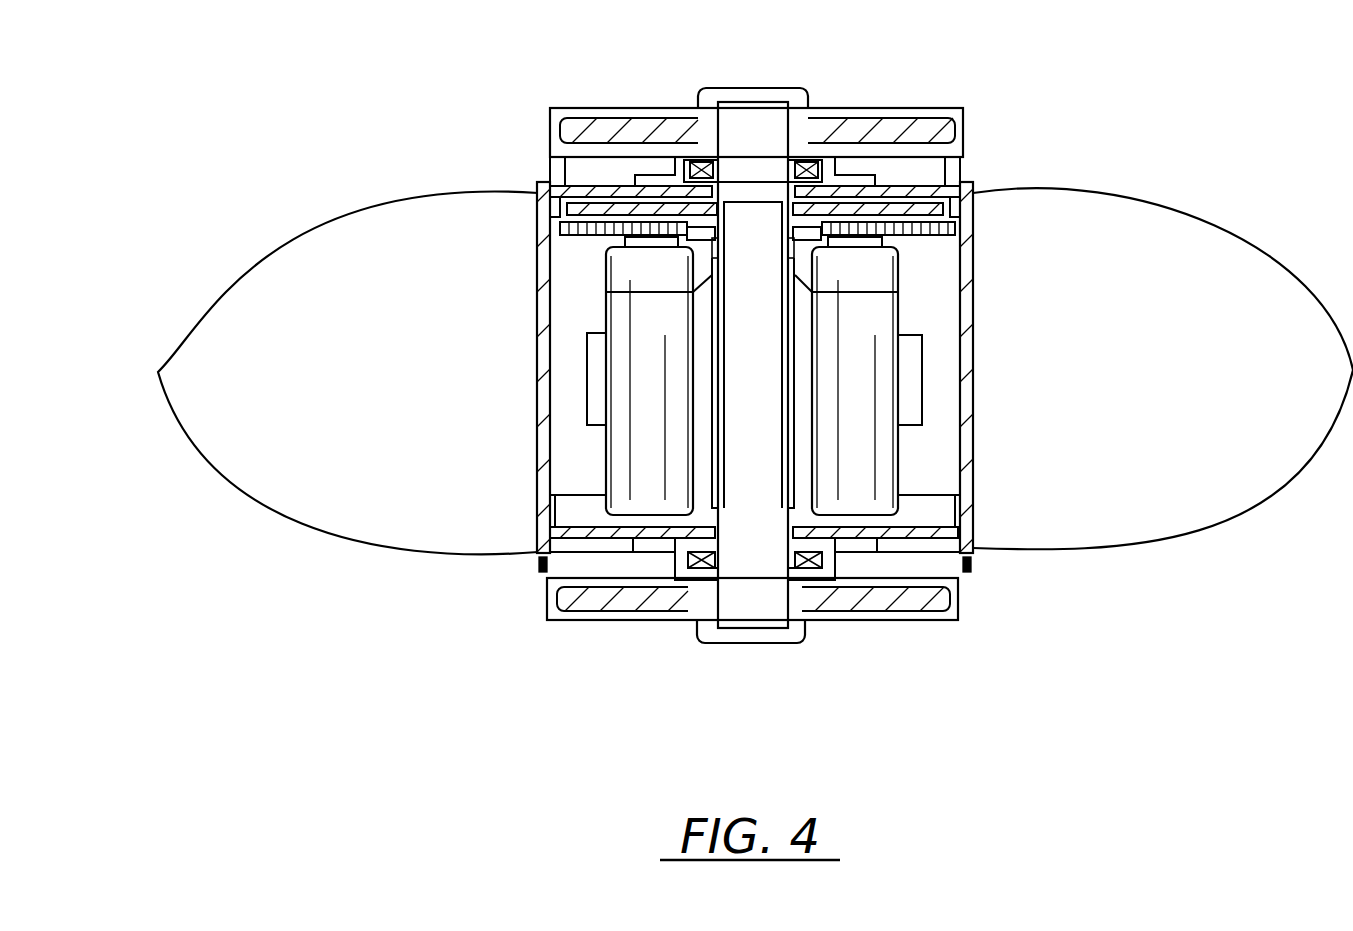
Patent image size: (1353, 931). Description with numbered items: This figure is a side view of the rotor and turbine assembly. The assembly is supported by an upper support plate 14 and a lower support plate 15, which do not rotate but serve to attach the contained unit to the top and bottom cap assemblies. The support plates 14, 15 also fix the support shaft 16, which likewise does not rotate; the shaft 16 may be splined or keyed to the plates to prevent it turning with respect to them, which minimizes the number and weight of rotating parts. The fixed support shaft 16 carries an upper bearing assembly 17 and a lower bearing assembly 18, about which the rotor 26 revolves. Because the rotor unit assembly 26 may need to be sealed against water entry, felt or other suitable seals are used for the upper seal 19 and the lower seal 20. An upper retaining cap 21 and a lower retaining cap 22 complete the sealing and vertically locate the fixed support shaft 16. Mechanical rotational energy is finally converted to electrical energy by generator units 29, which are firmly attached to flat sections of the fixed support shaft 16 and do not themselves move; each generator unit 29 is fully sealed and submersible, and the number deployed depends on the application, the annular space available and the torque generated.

The upper support plate 14 is at (963, 132).
The lower support plate 15 is at (960, 620).
The support shaft 16 is at (738, 140).
The upper bearing assembly 17 is at (850, 175).
The lower bearing assembly 18 is at (673, 572).
The upper seal 19 is at (555, 162).
The lower seal 20 is at (545, 565).
The upper retaining cap 21 is at (770, 88).
The lower retaining cap 22 is at (783, 642).
The rotor 26 is at (265, 233).
The generator unit 29 is at (935, 315).